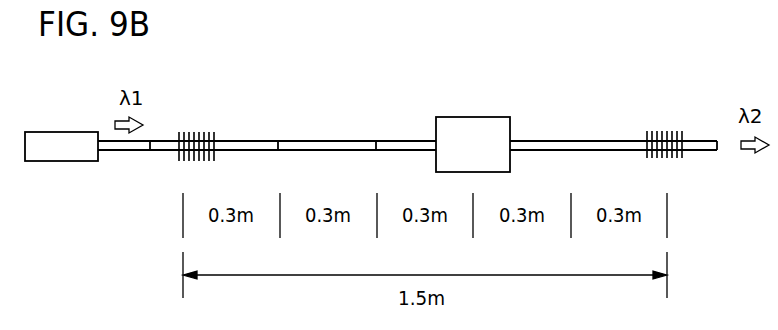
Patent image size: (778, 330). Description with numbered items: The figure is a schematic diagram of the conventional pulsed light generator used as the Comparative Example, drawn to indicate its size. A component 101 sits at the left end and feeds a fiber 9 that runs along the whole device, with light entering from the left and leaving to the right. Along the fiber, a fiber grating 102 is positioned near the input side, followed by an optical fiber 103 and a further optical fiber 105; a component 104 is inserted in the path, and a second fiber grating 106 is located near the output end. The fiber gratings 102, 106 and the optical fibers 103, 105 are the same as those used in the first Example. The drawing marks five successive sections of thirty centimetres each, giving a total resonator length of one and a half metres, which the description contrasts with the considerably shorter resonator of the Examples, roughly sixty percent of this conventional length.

The optical fiber 9 is at (122, 150).
The light source 101 is at (55, 153).
The fiber grating 102 is at (241, 141).
The optical fiber 103 is at (325, 141).
The optical device 104 is at (477, 128).
The optical fiber 105 is at (405, 141).
The fiber grating 106 is at (621, 142).